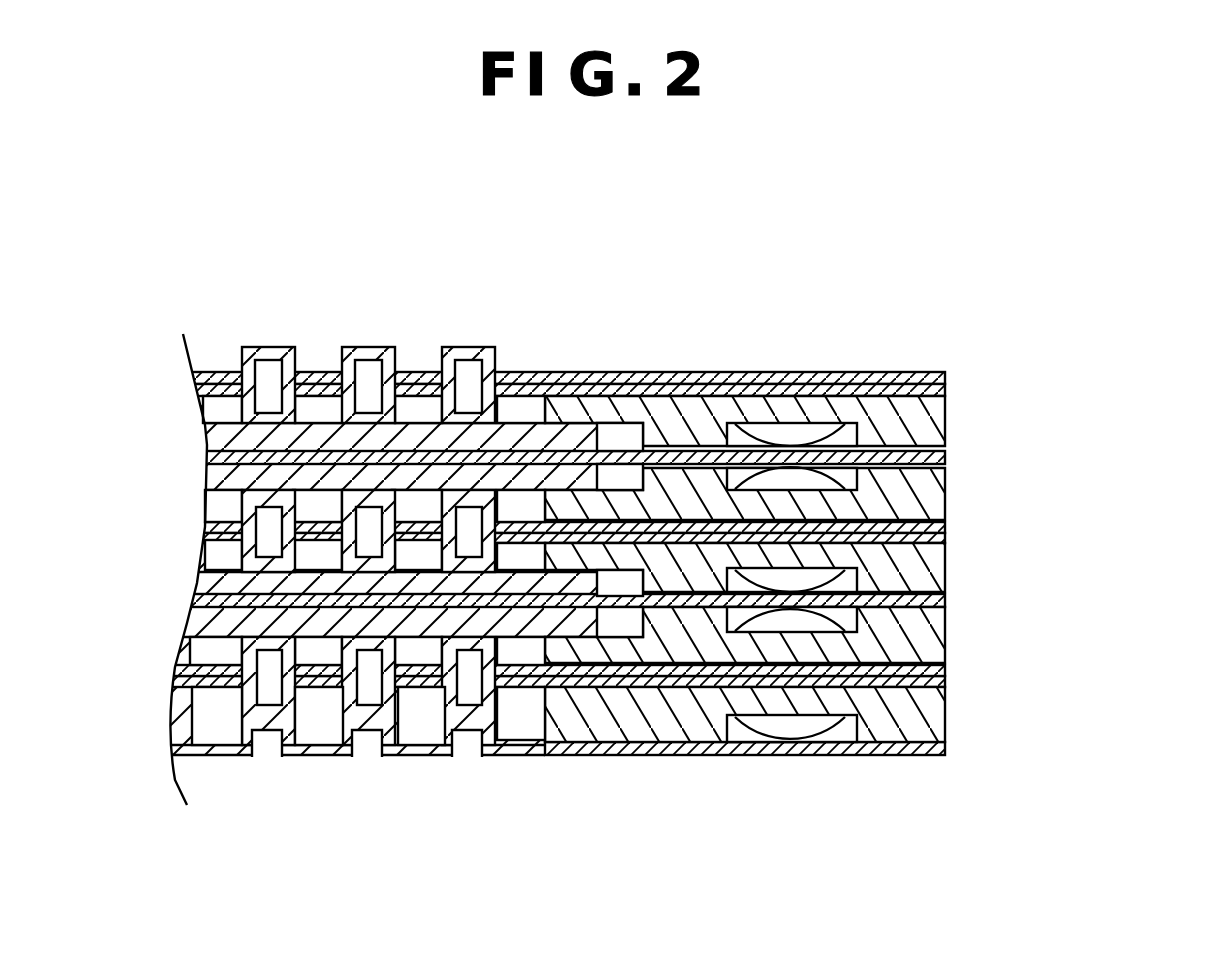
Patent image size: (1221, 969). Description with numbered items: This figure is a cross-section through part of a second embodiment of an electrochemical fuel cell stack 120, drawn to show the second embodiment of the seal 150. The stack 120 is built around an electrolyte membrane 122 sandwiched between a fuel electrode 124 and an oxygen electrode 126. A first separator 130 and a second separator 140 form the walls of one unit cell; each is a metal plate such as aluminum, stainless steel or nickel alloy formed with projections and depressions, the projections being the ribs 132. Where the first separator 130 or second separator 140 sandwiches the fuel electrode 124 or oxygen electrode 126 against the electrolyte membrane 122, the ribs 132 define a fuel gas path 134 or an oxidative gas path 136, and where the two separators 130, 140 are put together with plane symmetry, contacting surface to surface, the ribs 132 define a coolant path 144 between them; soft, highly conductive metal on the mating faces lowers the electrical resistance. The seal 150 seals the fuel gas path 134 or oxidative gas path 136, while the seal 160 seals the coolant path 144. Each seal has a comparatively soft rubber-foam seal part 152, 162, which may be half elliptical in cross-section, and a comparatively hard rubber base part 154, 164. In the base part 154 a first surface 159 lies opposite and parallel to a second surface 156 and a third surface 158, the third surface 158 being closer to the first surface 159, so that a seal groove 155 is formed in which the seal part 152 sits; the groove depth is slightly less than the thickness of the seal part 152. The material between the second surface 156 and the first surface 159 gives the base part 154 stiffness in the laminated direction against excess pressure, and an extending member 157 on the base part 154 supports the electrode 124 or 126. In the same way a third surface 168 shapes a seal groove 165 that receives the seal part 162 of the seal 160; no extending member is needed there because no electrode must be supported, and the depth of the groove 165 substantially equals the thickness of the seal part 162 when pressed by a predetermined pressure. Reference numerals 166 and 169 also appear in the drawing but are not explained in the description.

The electrochemical fuel cell stack 120 is at (1006, 304).
The electrolyte membrane 122 is at (557, 457).
The fuel electrode 124 is at (707, 517).
The oxygen electrode 126 is at (600, 438).
The first separator 130 is at (557, 569).
The ribs 132 is at (316, 651).
The fuel gas path 134 is at (323, 506).
The oxidative gas path 136 is at (323, 555).
The second separator 140 is at (557, 529).
The coolant path 144 is at (415, 362).
The seal 150 is at (1103, 450).
The seal part 152 is at (745, 529).
The base part 154 is at (745, 530).
The seal groove 155 is at (557, 600).
The second surface 156 is at (423, 568).
The extending member 157 is at (620, 583).
The third surface 158 is at (740, 572).
The first surface 159 is at (714, 437).
The seal 160 is at (1103, 773).
The seal part 162 is at (947, 748).
The base part 164 is at (745, 714).
The seal groove 165 is at (750, 735).
The insulating layer pair 166 is at (557, 532).
The third surface 168 is at (738, 735).
The conductor step 169 is at (620, 622).